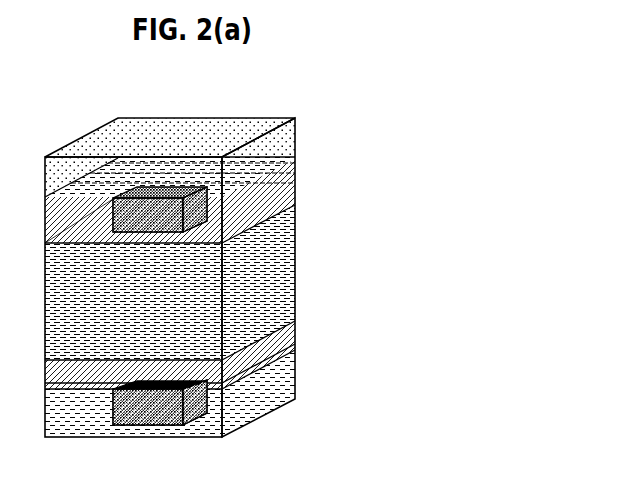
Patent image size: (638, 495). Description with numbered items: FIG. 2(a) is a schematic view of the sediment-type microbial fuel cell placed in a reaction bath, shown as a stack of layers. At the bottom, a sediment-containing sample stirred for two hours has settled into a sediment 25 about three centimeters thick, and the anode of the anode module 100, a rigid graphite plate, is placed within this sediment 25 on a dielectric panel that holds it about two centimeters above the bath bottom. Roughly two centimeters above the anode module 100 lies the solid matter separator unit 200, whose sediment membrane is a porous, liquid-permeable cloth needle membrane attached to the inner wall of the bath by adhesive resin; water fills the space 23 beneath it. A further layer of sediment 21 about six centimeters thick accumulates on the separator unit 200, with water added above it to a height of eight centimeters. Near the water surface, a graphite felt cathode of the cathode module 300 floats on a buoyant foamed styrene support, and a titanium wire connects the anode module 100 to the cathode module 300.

The cathode module 300 is at (205, 186).
The sediment 21 is at (280, 270).
The solid matter separator unit 200 is at (207, 369).
The space 23 is at (285, 346).
The sediment 25 is at (285, 381).
The anode module 100 is at (207, 401).